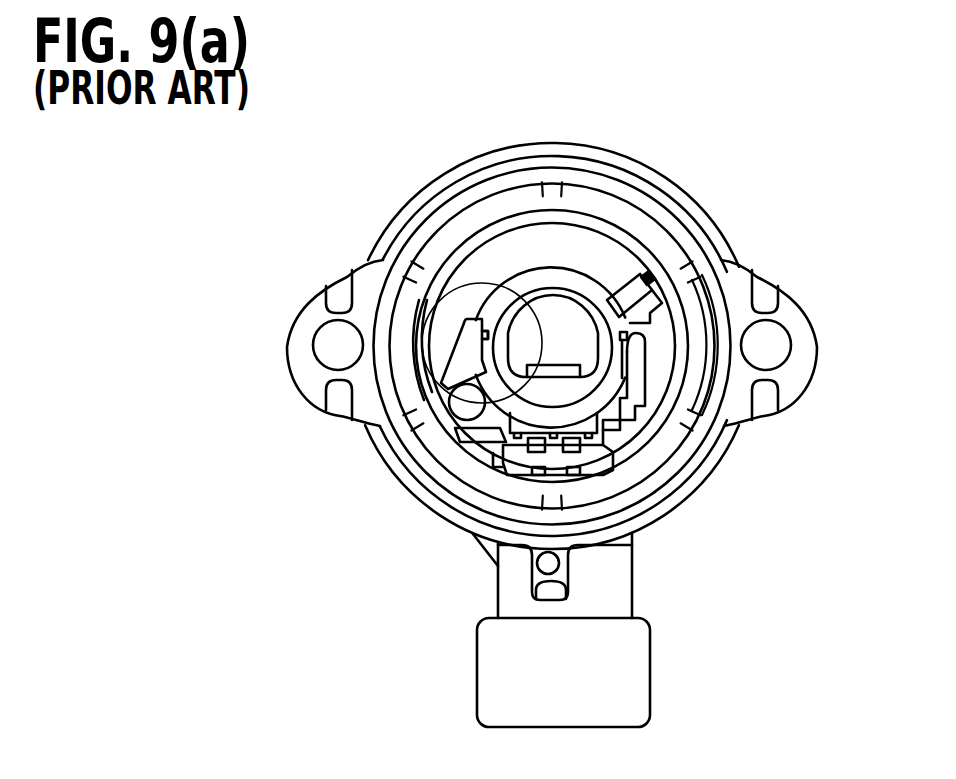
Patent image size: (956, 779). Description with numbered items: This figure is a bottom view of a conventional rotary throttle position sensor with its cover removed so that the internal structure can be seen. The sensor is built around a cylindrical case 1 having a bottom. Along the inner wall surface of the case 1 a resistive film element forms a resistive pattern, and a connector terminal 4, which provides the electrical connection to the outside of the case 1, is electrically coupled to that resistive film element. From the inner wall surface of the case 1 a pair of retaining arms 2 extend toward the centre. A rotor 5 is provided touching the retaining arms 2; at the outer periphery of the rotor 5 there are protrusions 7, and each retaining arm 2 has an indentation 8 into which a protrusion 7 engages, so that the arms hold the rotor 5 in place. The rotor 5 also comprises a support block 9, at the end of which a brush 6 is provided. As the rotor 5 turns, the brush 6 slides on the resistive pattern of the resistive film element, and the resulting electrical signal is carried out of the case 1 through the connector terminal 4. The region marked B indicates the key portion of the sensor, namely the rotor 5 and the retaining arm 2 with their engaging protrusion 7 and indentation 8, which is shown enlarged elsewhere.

The case 1 is at (708, 486).
The retaining arm 2 is at (468, 347).
The connector terminal 4 is at (588, 443).
The rotor 5 is at (535, 287).
The brush 6 is at (604, 227).
The protrusion 7 is at (483, 326).
The indentation 8 is at (484, 330).
The support block 9 is at (647, 280).
The circle B is at (486, 282).